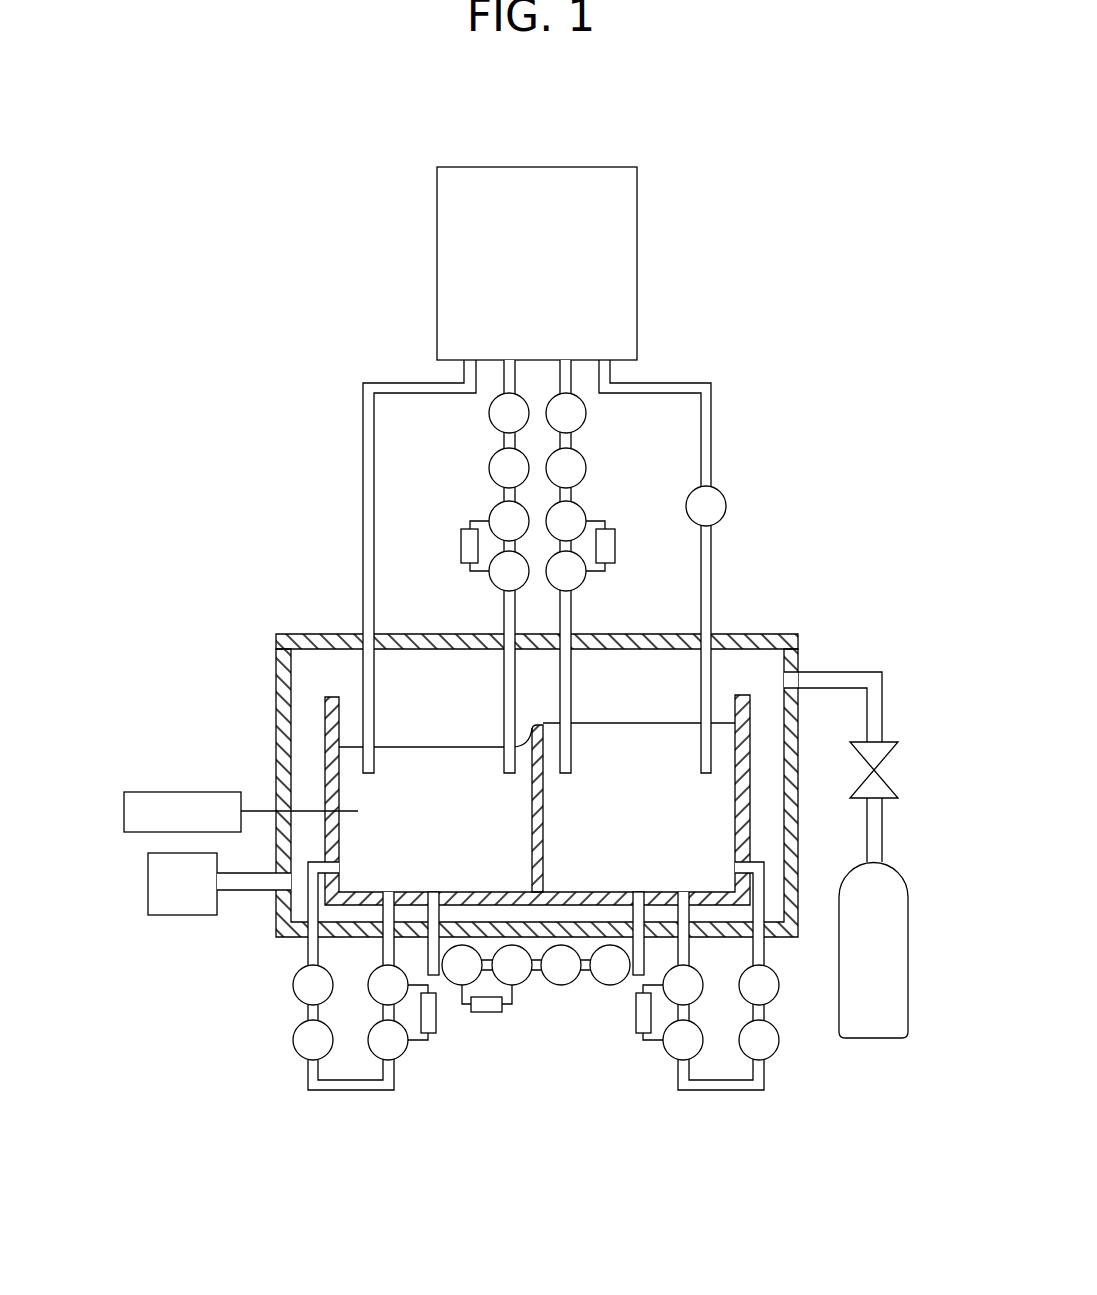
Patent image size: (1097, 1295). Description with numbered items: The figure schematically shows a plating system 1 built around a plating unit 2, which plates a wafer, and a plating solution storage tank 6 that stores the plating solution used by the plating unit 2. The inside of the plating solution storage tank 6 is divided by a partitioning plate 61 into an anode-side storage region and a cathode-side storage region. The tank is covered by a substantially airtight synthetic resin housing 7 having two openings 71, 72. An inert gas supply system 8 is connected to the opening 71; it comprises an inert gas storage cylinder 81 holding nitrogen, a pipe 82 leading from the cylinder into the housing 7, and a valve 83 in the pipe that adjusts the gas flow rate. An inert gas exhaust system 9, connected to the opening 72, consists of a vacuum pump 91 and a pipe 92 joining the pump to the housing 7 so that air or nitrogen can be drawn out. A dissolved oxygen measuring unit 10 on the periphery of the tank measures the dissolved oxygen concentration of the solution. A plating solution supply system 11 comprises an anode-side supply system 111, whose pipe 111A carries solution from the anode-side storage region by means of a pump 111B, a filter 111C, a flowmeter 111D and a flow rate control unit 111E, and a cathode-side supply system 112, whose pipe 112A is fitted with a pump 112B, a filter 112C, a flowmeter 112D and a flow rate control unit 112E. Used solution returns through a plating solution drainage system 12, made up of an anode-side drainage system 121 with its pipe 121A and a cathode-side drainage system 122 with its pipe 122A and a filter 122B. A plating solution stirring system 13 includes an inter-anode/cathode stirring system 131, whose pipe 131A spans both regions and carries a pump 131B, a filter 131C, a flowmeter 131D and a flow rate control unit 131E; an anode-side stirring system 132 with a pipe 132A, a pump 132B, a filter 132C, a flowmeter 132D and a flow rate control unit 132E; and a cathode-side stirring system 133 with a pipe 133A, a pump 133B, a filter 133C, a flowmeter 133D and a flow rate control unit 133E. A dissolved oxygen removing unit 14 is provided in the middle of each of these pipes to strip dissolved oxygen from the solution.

The plating system 1 is at (500, 148).
The plating unit 2 is at (639, 233).
The plating solution storage tank 6 is at (492, 800).
The partitioning plate 61 is at (543, 822).
The housing 7 is at (533, 754).
The opening 71 is at (798, 667).
The opening 72 is at (276, 898).
The inert gas supply system 8 is at (860, 820).
The inert gas storage cylinder 81 is at (903, 872).
The pipe 82 is at (882, 712).
The valve 83 is at (885, 788).
The inert gas exhaust system 9 is at (214, 924).
The vacuum pump 91 is at (152, 916).
The pipe 92 is at (245, 870).
The dissolved oxygen measuring unit 10 is at (170, 792).
The plating solution supply system 11 is at (538, 566).
The plating solution drainage system 12 is at (538, 539).
The plating solution stirring system 13 is at (521, 1016).
The dissolved oxygen removing unit 14 is at (489, 468).
The anode-side supply system 111 is at (457, 566).
The pipe 111A is at (504, 687).
The pump 111B is at (490, 581).
The filter 111C is at (489, 413).
The flowmeter 111D is at (490, 511).
The flow rate control unit 111E is at (460, 545).
The cathode-side supply system 112 is at (618, 566).
The pipe 112A is at (571, 686).
The pump 112B is at (586, 585).
The filter 112C is at (586, 413).
The flowmeter 112D is at (586, 508).
The flow rate control unit 112E is at (616, 545).
The anode-side drainage system 121 is at (367, 566).
The pipe 121A is at (362, 516).
The cathode-side drainage system 122 is at (708, 566).
The pipe 122A is at (714, 568).
The filter 122B is at (726, 506).
The inter-anode/cathode stirring system 131 is at (532, 1004).
The pipe 131A is at (592, 978).
The pump 131B is at (450, 990).
The filter 131C is at (611, 988).
The flowmeter 131D is at (510, 990).
The flow rate control unit 131E is at (487, 1014).
The anode-side stirring system 132 is at (336, 1011).
The pipe 132A is at (355, 1092).
The pump 132B is at (369, 980).
The filter 132C is at (292, 985).
The flowmeter 132D is at (405, 1062).
The flow rate control unit 132E is at (430, 1046).
The cathode-side stirring system 133 is at (708, 1014).
The pipe 133A is at (715, 1092).
The pump 133B is at (703, 978).
The filter 133C is at (779, 978).
The flowmeter 133D is at (668, 1062).
The flow rate control unit 133E is at (640, 1036).